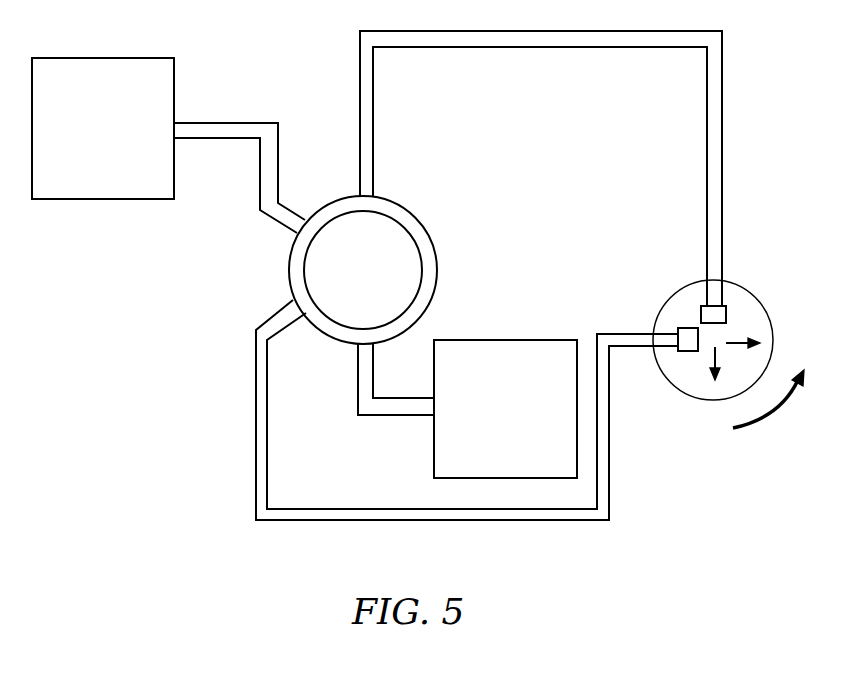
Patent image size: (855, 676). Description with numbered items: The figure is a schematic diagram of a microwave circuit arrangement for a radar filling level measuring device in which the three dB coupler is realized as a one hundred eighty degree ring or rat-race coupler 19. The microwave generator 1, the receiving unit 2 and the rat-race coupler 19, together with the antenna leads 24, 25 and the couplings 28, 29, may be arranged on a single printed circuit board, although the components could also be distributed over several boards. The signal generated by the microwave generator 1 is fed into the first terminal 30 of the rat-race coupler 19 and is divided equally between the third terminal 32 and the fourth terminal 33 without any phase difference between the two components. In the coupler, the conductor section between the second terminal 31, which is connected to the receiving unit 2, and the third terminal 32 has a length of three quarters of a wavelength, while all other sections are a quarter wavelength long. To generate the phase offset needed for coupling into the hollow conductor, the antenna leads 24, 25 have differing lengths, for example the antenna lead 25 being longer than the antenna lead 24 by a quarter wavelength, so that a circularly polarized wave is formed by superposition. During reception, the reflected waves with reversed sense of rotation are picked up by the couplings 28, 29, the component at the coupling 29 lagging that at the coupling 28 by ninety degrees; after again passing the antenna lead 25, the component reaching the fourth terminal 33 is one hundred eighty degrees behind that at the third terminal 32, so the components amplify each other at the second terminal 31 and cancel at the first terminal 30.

The microwave generator 1 is at (178, 83).
The receiving unit 2 is at (495, 335).
The rat-race coupler 19 is at (448, 243).
The antenna lead 24 is at (512, 35).
The antenna lead 25 is at (437, 517).
The coupling 28 is at (723, 310).
The coupling 29 is at (685, 348).
The first terminal 30 is at (304, 213).
The second terminal 31 is at (350, 348).
The third terminal 32 is at (378, 197).
The fourth terminal 33 is at (288, 301).